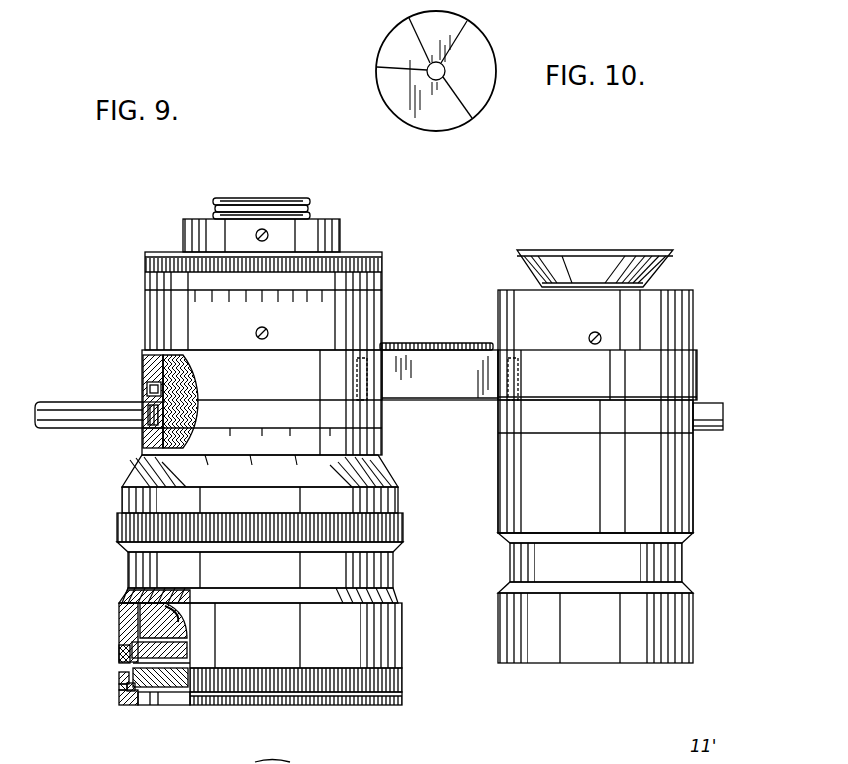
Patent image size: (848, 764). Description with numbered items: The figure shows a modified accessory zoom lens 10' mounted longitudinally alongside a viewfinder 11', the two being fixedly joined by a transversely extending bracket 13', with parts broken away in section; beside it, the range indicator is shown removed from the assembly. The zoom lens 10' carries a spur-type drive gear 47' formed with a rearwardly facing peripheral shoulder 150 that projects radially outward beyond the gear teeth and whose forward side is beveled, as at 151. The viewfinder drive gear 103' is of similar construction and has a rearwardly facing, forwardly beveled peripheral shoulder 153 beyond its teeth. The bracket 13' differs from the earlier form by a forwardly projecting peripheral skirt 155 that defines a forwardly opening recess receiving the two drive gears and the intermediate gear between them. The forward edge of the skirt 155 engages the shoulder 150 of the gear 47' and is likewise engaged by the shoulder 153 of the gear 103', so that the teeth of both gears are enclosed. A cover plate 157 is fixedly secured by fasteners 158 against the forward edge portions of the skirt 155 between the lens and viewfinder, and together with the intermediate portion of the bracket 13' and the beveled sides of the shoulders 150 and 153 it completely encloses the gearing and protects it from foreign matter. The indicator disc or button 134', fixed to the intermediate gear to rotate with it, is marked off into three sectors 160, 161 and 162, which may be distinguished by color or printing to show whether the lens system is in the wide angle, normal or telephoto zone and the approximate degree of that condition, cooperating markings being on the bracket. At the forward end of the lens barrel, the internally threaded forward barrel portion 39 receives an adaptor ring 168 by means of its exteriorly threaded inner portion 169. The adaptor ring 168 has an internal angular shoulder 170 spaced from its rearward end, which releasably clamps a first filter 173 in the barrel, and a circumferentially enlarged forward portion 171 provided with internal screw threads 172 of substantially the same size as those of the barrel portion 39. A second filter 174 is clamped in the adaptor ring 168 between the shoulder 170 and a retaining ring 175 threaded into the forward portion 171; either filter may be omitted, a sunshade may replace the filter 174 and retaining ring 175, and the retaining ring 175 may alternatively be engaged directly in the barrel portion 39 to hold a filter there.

In FIG. 9, the zoom effect accessory lens 10' is at (230, 451).
In FIG. 9, the viewfinder 11' is at (634, 452).
In FIG. 9, the bracket 13' is at (634, 370).
In FIG. 9, the forward end portion of the focusing tube 39 is at (118, 637).
In FIG. 9, the drive ring or gear 47' is at (145, 414).
In FIG. 9, the viewfinder drive ring or gear 103' is at (577, 466).
In FIG. 9, the disc or indicator button 134' is at (436, 332).
In FIG. 10, the disc or indicator button 134' is at (436, 91).
In FIG. 9, the peripheral shoulder 150 is at (143, 400).
In FIG. 9, the beveled forward side 151 is at (120, 423).
In FIG. 9, the peripheral lip or shoulder 153 is at (700, 405).
In FIG. 9, the peripheral skirt 155 is at (150, 388).
In FIG. 9, the cover plate 157 is at (438, 400).
In FIG. 9, the fasteners 158 is at (362, 382).
In FIG. 10, the disc sector 160 is at (384, 47).
In FIG. 10, the disc sector 161 is at (465, 17).
In FIG. 10, the disc sector 162 is at (483, 100).
In FIG. 9, the adaptor ring 168 is at (115, 676).
In FIG. 9, the exteriorly threaded inner portion 169 is at (122, 656).
In FIG. 9, the internal angular shoulder 170 is at (178, 640).
In FIG. 9, the forward portion of the adaptor ring 171 is at (125, 695).
In FIG. 9, the internal screw threads 172 is at (118, 686).
In FIG. 9, the filter 173 is at (150, 636).
In FIG. 9, the second filter 174 is at (176, 688).
In FIG. 9, the retaining ring 175 is at (138, 706).